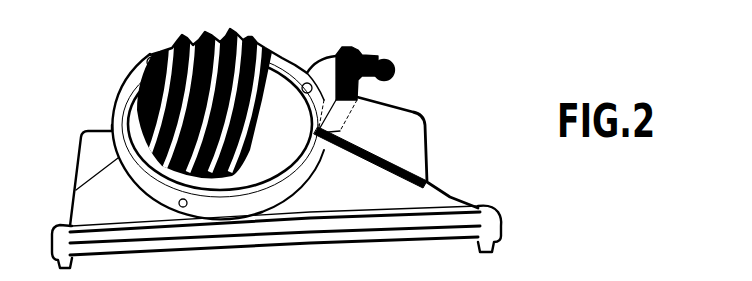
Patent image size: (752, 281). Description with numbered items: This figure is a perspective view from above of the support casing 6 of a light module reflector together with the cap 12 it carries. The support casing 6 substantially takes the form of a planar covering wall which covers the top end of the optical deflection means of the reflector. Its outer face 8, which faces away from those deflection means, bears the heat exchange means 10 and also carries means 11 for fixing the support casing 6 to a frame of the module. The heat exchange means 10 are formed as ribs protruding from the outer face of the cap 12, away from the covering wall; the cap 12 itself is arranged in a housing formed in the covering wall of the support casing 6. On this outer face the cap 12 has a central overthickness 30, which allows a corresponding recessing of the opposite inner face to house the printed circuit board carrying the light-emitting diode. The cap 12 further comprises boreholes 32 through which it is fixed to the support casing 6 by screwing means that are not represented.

The support casing 6 is at (98, 197).
The outer face 8 is at (378, 174).
The heat exchange means 10 is at (258, 42).
The fixing means 11 is at (396, 69).
The cap 12 is at (121, 108).
The central overthickness 30 is at (145, 90).
The boreholes 32 is at (155, 56).